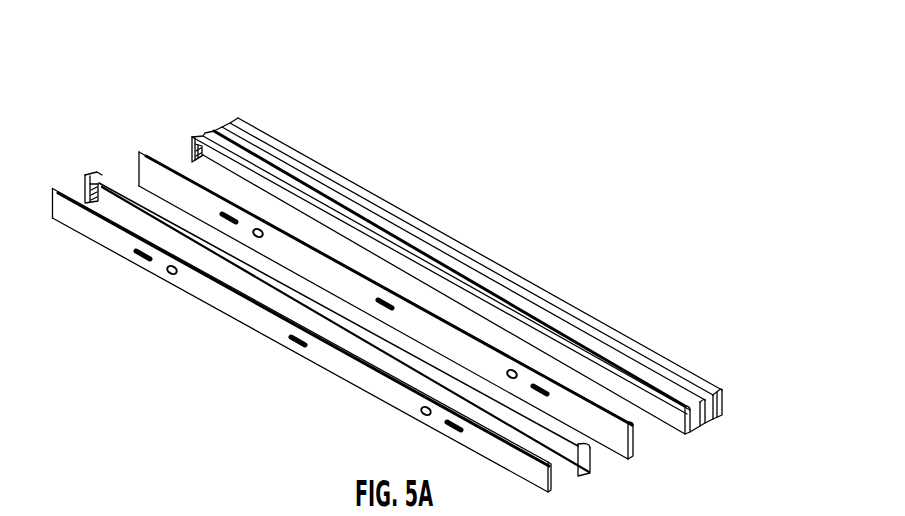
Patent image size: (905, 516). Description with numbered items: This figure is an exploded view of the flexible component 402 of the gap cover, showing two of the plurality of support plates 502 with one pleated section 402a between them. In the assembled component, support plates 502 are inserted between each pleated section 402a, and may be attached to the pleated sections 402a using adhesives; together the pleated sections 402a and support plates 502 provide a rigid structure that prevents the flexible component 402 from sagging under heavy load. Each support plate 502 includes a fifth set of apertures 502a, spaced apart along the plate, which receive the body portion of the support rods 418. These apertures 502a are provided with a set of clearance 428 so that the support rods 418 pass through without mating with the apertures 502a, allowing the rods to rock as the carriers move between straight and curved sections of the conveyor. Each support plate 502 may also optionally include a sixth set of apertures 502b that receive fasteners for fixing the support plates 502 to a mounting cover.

The flexible component 402 is at (468, 78).
The pleated section 402a is at (587, 436).
The set of clearance 428 is at (153, 262).
The support plate 502 is at (349, 258).
The fifth set of apertures 502a is at (233, 213).
The sixth set of apertures 502b is at (264, 225).
The support rod 418 is at (302, 353).